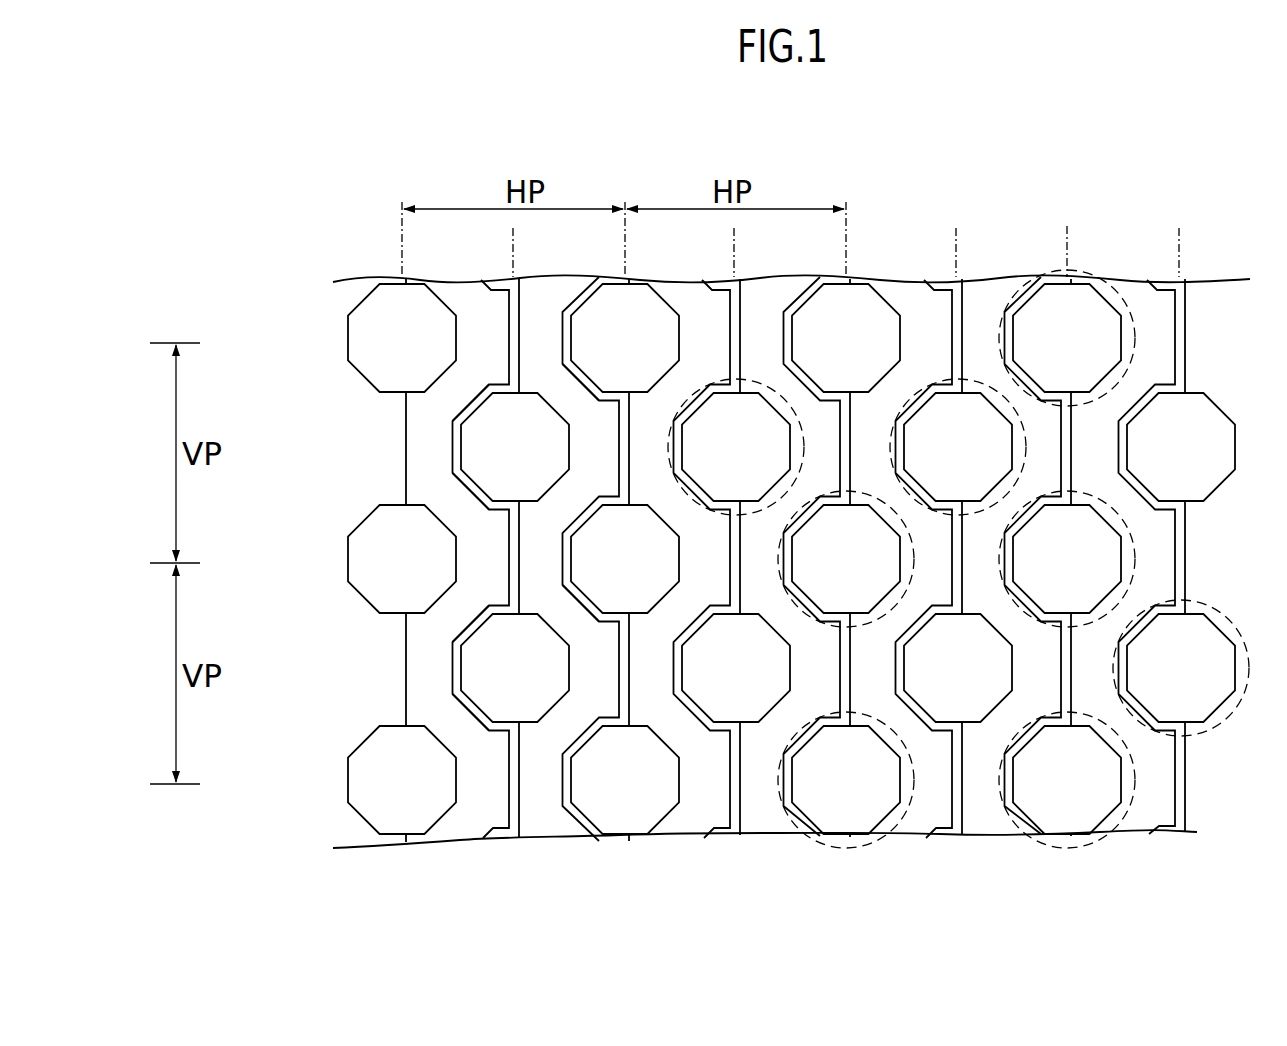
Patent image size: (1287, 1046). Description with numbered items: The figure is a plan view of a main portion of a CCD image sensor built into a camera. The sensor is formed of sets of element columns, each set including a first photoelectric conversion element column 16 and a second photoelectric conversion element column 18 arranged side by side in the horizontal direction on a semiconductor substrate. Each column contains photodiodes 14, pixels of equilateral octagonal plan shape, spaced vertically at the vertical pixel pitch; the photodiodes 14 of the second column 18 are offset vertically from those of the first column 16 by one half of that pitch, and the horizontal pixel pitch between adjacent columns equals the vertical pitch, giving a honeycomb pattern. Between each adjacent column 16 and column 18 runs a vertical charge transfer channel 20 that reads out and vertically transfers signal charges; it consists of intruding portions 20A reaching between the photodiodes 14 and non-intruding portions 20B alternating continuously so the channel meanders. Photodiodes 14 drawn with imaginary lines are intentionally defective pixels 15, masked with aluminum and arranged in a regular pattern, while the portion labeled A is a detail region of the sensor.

The photodiode 14 is at (452, 386).
The intentionally defective pixel 15 is at (713, 380).
The first photoelectric conversion element column 16 is at (402, 252).
The second photoelectric conversion element column 18 is at (513, 264).
The vertical charge transfer channel 20 is at (456, 298).
The intruding portion 20A is at (562, 356).
The non-intruding portion 20B is at (588, 411).
The region A is at (752, 683).